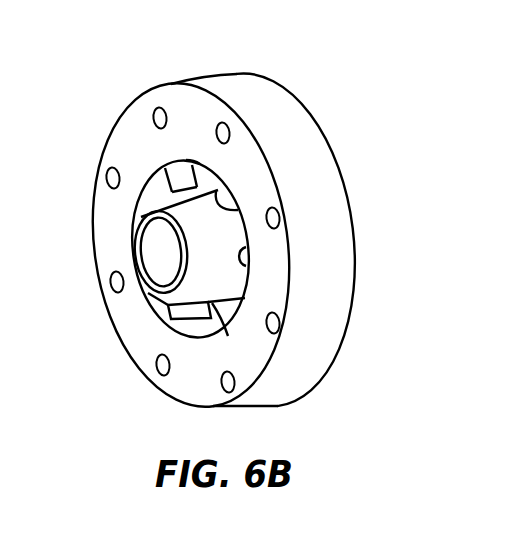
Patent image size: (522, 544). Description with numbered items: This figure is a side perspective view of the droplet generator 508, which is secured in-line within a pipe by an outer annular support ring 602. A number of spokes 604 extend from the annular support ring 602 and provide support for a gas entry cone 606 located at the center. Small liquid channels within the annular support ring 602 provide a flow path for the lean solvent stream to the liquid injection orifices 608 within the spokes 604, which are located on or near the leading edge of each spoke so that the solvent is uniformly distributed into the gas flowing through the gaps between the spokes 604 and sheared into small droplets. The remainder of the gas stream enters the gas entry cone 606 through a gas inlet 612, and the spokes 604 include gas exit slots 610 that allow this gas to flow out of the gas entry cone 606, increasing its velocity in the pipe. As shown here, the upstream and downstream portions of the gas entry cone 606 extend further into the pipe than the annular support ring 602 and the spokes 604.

The droplet generator 508 is at (153, 50).
The outer annular support ring 602 is at (356, 268).
The spokes 604 is at (235, 325).
The gas entry cone 606 is at (165, 168).
The liquid injection orifices 608 is at (182, 180).
The gas exit slots 610 is at (199, 169).
The gas inlet 612 is at (160, 250).